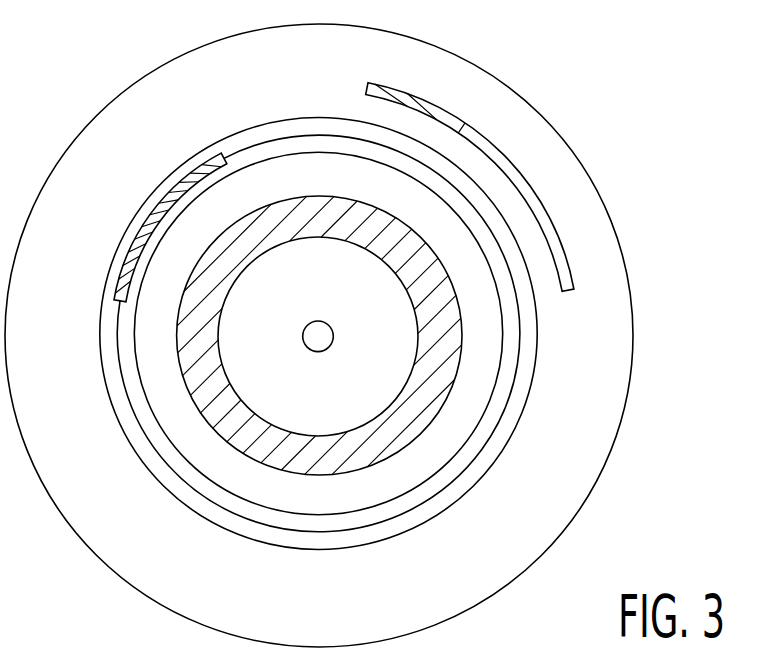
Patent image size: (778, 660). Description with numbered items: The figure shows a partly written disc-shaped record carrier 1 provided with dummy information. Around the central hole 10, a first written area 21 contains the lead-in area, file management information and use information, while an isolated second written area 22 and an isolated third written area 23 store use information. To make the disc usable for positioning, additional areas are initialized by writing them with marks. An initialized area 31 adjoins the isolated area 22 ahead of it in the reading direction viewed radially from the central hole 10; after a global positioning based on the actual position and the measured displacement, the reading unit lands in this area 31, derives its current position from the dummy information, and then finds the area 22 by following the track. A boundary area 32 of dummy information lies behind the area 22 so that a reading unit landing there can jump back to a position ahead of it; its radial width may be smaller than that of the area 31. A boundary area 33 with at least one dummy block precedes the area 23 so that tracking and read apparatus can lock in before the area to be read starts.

The record carrier 1 is at (596, 161).
The central hole 10 is at (330, 329).
The first written area 21 is at (357, 465).
The second written area 22 is at (128, 261).
The third written area 23 is at (407, 97).
The initialized area 31 is at (285, 522).
The boundary area 32 is at (313, 547).
The boundary area 33 is at (566, 292).